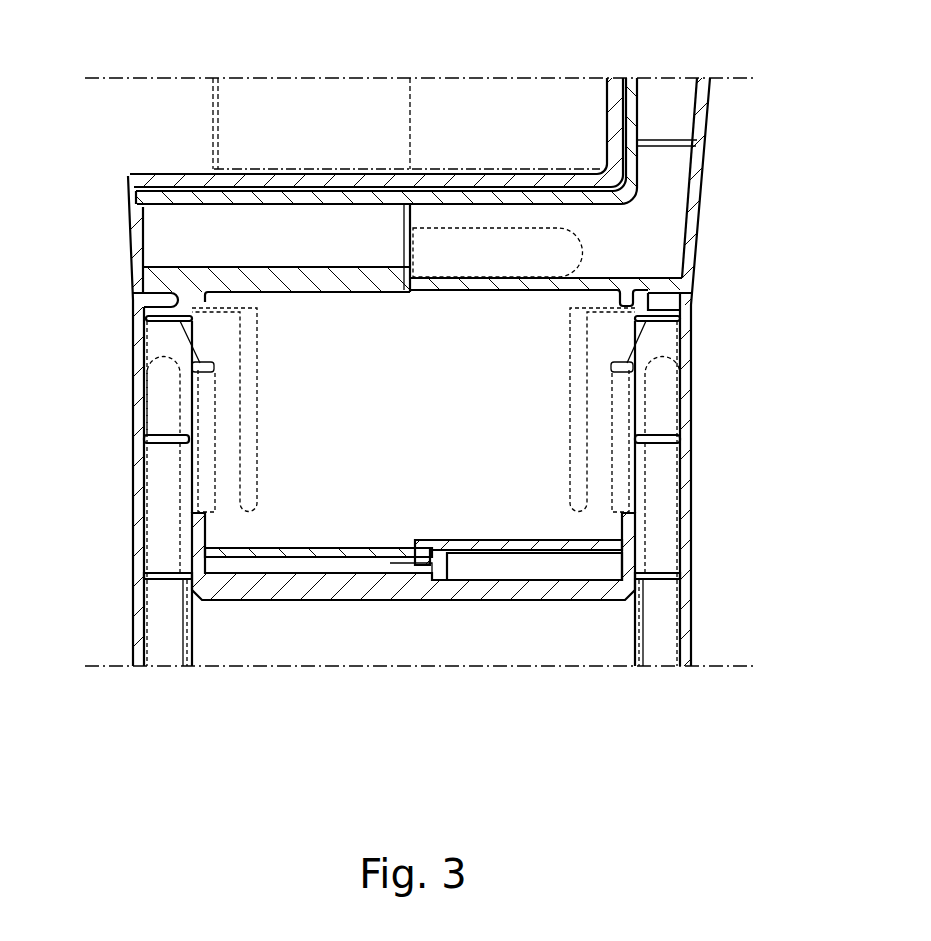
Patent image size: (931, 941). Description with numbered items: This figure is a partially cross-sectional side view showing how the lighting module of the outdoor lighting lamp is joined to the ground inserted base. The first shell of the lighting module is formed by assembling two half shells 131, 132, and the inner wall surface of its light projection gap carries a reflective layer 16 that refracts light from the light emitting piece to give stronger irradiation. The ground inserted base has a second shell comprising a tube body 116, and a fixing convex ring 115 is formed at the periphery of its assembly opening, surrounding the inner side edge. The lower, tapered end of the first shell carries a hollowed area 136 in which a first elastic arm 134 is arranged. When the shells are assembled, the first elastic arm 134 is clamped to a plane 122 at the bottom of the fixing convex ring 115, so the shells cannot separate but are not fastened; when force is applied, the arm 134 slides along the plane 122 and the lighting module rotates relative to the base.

The reflective layer 16 is at (599, 101).
The fixing convex ring 115 is at (163, 292).
The tube body 116 is at (693, 616).
The plane 122 is at (150, 326).
The half shell 131 is at (497, 335).
The half shell 132 is at (355, 322).
The first elastic arm 134 is at (190, 341).
The hollowed area 136 is at (250, 428).